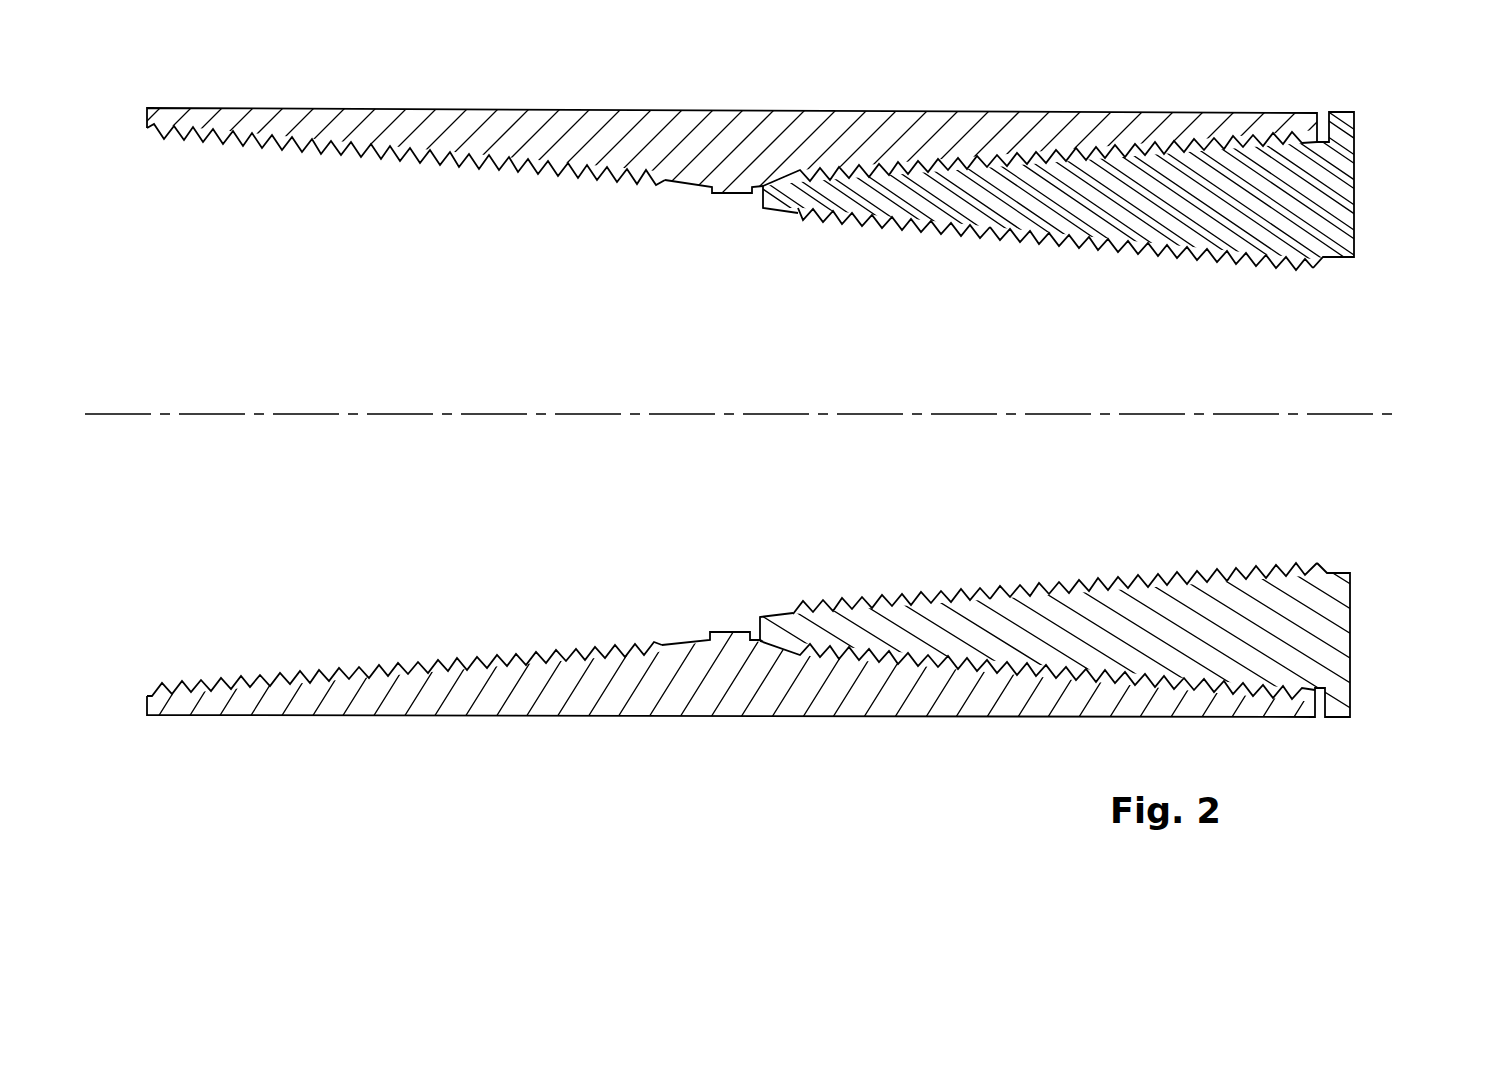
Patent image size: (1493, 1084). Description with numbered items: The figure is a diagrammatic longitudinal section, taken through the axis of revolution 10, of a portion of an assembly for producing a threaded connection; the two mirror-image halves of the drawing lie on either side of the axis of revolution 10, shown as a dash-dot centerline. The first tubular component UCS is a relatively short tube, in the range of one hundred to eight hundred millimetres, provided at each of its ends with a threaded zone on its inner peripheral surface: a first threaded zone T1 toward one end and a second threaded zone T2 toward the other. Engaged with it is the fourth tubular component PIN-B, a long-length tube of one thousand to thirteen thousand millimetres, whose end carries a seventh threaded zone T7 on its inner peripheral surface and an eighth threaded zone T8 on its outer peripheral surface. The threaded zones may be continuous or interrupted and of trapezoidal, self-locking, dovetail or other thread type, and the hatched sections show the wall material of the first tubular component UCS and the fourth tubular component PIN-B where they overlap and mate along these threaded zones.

The axis of revolution 10 is at (1320, 413).
The fourth tubular component PIN-B is at (1245, 196).
The first threaded zone T1 is at (362, 146).
The first tubular component UCS is at (690, 157).
The second threaded zone T2 is at (990, 158).
The seventh threaded zone T7 is at (1134, 240).
The eighth threaded zone T8 is at (1100, 155).